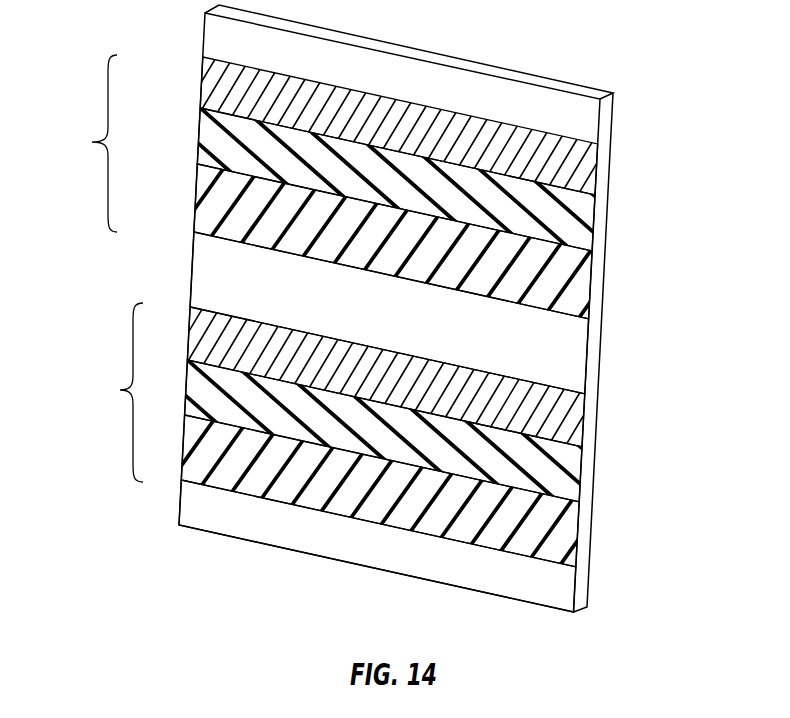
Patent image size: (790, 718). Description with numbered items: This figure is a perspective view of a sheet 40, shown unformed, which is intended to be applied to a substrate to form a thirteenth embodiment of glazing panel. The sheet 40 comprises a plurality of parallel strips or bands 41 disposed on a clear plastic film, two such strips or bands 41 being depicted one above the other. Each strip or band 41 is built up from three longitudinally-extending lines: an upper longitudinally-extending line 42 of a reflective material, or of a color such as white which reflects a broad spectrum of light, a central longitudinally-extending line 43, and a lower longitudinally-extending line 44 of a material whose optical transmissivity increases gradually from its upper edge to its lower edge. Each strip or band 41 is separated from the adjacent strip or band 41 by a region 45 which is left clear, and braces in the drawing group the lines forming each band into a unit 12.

The layered group 12 is at (92, 142).
The sheet 40 is at (628, 114).
The strip or band 41 is at (232, 238).
The upper longitudinally-extending line 42 is at (218, 81).
The central longitudinally-extending line 43 is at (577, 205).
The lower longitudinally-extending line 44 is at (570, 282).
The clear region 45 is at (572, 353).